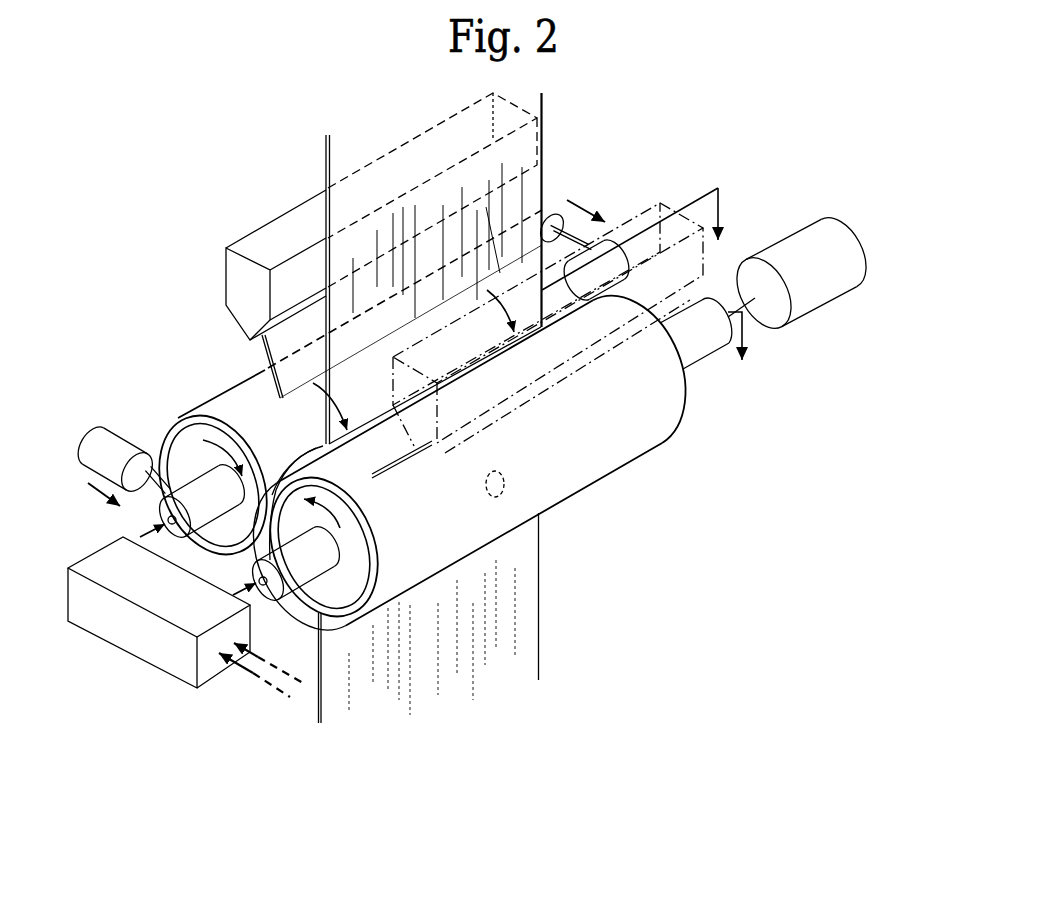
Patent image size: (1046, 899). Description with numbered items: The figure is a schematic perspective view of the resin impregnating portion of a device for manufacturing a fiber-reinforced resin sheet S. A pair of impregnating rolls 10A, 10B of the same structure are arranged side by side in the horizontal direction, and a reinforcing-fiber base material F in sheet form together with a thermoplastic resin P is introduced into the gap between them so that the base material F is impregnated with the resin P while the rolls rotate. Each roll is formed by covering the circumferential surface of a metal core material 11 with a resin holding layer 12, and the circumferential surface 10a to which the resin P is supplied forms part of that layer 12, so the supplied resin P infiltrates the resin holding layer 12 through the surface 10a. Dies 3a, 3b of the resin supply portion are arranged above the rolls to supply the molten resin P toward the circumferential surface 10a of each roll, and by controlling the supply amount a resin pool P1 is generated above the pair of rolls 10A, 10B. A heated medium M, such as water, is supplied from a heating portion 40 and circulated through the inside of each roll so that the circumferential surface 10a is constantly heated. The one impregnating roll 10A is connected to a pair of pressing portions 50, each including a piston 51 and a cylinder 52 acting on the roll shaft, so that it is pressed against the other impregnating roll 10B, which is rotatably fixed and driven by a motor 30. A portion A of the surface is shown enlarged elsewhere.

The impregnating roll 10A is at (161, 365).
The impregnating roll 10B is at (689, 400).
The circumferential surface 10a is at (677, 433).
The core material 11 is at (200, 438).
The resin holding layer 12 is at (258, 383).
The motor 30 is at (818, 248).
The die 3a is at (232, 300).
The die 3b is at (483, 410).
The heating portion 40 is at (132, 630).
The pressing portion 50 is at (554, 202).
The piston 51 is at (153, 492).
The cylinder 52 is at (100, 443).
The reinforcing-fiber base material F is at (330, 175).
The heated medium M is at (733, 208).
The thermoplastic resin P is at (317, 413).
The resin pool P1 is at (323, 447).
The fiber-reinforced resin sheet S is at (330, 703).
The portion A is at (505, 486).